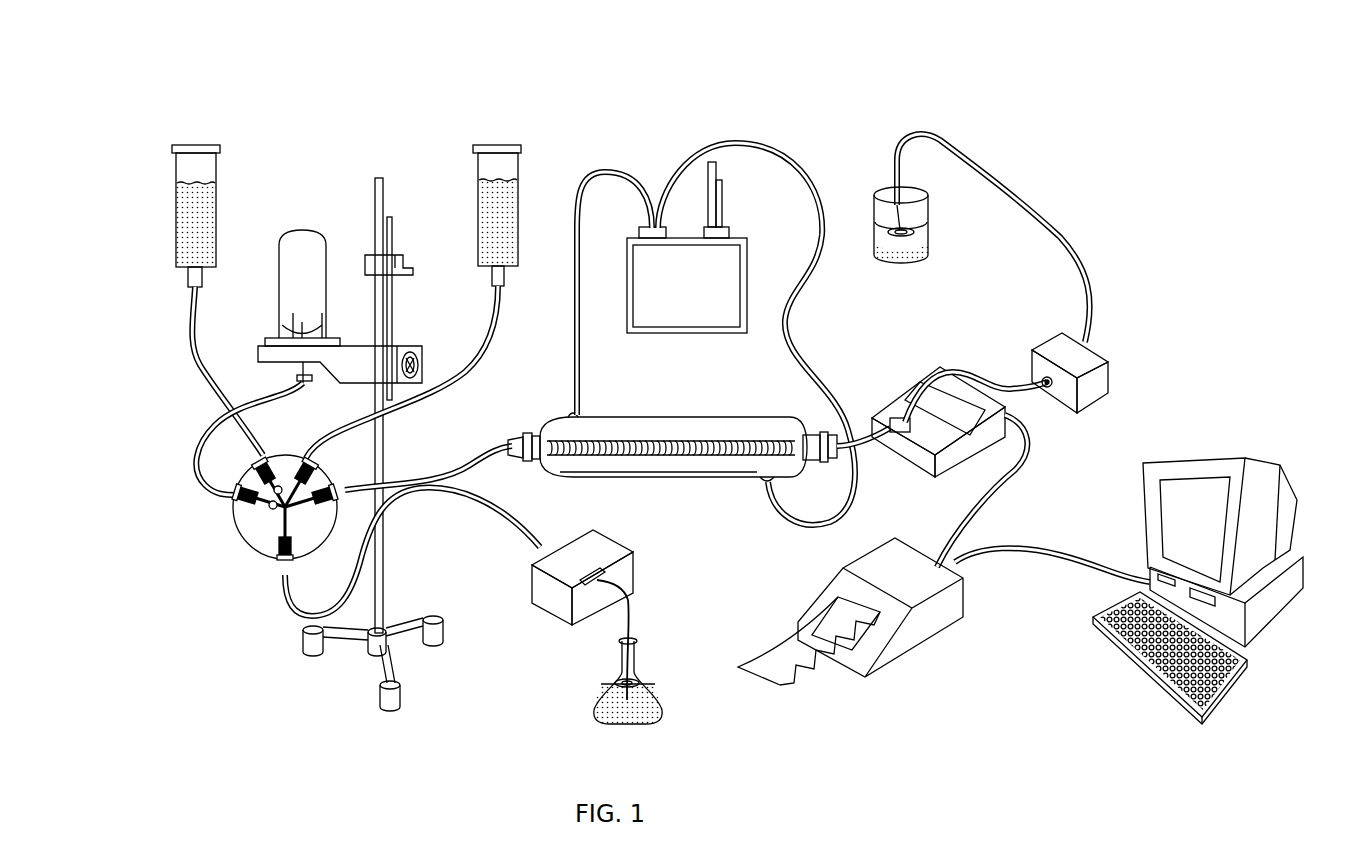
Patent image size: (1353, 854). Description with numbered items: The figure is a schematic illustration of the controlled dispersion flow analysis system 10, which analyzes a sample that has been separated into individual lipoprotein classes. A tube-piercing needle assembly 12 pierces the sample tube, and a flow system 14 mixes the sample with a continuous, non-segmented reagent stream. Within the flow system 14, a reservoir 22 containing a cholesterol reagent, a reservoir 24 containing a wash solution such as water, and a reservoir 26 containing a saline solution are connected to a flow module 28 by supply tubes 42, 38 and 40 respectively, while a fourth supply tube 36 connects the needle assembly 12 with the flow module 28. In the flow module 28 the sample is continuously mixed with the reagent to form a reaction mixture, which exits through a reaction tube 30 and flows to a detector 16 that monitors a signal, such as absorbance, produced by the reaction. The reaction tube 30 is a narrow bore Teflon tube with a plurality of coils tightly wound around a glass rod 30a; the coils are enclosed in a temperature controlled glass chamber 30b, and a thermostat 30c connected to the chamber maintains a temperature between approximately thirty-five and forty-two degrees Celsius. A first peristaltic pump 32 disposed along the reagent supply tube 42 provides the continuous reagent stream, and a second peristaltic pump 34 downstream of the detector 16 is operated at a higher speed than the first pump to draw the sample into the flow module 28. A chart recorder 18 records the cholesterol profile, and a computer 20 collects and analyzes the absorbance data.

The controlled dispersion flow analysis system 10 is at (465, 100).
The tube-piercing needle assembly 12 is at (403, 347).
The flow system 14 is at (262, 628).
The detector 16 is at (897, 407).
The chart recorder 18 is at (923, 633).
The computer 20 is at (1273, 613).
The reservoir 22 is at (637, 720).
The reservoir 24 is at (214, 212).
The reservoir 26 is at (488, 200).
The flow module 28 is at (253, 535).
The reaction tube 30 is at (600, 336).
The glass rod 30a is at (550, 452).
The temperature controlled glass chamber 30b is at (686, 428).
The thermostat 30c is at (718, 309).
The first peristaltic pump 32 is at (555, 610).
The second peristaltic pump 34 is at (1100, 388).
The fourth supply tube 36 is at (198, 462).
The supply tube 38 is at (208, 378).
The supply tube 40 is at (447, 395).
The reagent supply tube 42 is at (457, 505).